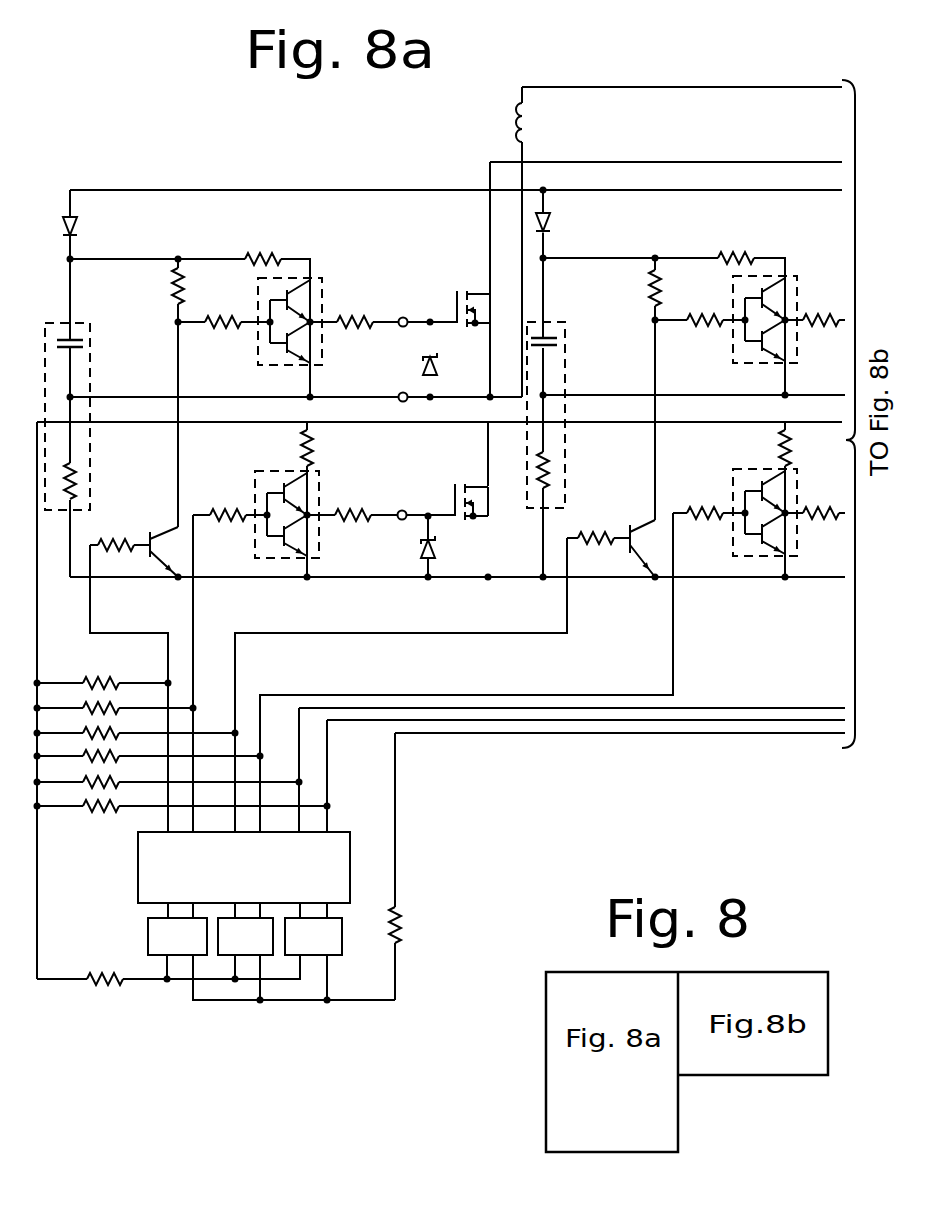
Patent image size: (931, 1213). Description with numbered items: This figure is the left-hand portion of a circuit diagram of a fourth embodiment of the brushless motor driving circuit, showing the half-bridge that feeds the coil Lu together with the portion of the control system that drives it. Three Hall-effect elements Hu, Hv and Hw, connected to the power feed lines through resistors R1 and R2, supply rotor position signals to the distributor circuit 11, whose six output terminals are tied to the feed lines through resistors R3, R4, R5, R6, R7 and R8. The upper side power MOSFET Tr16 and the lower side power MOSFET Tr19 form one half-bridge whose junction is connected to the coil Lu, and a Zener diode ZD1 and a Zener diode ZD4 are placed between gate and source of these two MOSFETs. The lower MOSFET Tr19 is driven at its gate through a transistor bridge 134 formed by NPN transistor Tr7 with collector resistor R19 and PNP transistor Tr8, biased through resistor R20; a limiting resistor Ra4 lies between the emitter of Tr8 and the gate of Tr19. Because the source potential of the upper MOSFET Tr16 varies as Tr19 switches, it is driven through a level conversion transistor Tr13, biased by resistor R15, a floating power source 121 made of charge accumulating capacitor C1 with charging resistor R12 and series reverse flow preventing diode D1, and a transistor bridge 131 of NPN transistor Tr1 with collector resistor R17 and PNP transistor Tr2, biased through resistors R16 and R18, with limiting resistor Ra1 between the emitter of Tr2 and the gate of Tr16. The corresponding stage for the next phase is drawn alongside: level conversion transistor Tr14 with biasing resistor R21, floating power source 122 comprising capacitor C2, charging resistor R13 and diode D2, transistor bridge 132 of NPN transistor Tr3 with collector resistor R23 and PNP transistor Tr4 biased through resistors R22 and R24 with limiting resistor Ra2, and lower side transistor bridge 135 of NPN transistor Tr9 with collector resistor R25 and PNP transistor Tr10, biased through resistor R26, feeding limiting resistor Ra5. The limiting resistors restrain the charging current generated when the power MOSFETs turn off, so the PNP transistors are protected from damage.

The coil Lu is at (543, 123).
The reverse flow preventing diode D1 is at (88, 230).
The reverse flow preventing diode D2 is at (564, 228).
The collector resistor R17 is at (266, 246).
The biasing resistor R16 is at (155, 288).
The biasing resistor R18 is at (220, 308).
The charge accumulating capacitor C1 is at (90, 343).
The floating power source 121 is at (92, 372).
The transistor bridge 131 is at (257, 360).
The NPN transistor Tr1 is at (318, 292).
The PNP transistor Tr2 is at (318, 346).
The limiting resistor Ra1 is at (362, 309).
The upper side power MOSFET Tr16 is at (463, 292).
The Zener diode ZD1 is at (451, 353).
The collector resistor R23 is at (741, 245).
The biasing resistor R22 is at (629, 289).
The biasing resistor R24 is at (701, 308).
The charge accumulating capacitor C2 is at (565, 343).
The floating power source 122 is at (567, 380).
The transistor bridge 132 is at (735, 343).
The NPN transistor Tr3 is at (783, 292).
The PNP transistor Tr4 is at (790, 346).
The limiting resistor Ra2 is at (826, 308).
The charging resistor R12 is at (85, 476).
The biasing resistor R15 is at (118, 532).
The level conversion transistor Tr13 is at (158, 560).
The transistor bridge 134 is at (260, 535).
The NPN transistor Tr7 is at (303, 480).
The PNP transistor Tr8 is at (320, 540).
The collector resistor R19 is at (331, 448).
The biasing resistor R20 is at (223, 503).
The limiting resistor Ra4 is at (357, 501).
The lower side power MOSFET Tr19 is at (457, 489).
The Zener diode ZD4 is at (423, 563).
The charging resistor R13 is at (547, 473).
The biasing resistor R21 is at (593, 526).
The level conversion transistor Tr14 is at (637, 557).
The transistor bridge 135 is at (737, 540).
The NPN transistor Tr9 is at (783, 472).
The PNP transistor Tr10 is at (783, 538).
The collector resistor R25 is at (808, 448).
The biasing resistor R26 is at (700, 501).
The limiting resistor Ra5 is at (824, 501).
The resistor R3 is at (100, 678).
The resistor R4 is at (113, 707).
The resistor R5 is at (117, 735).
The resistor R6 is at (92, 758).
The resistor R7 is at (110, 790).
The resistor R8 is at (90, 813).
The distributor circuit 11 is at (341, 831).
The Hall-effect element Hu is at (177, 936).
The Hall-effect element Hv is at (245, 936).
The Hall-effect element Hw is at (313, 936).
The resistor R1 is at (102, 965).
The resistor R2 is at (416, 929).